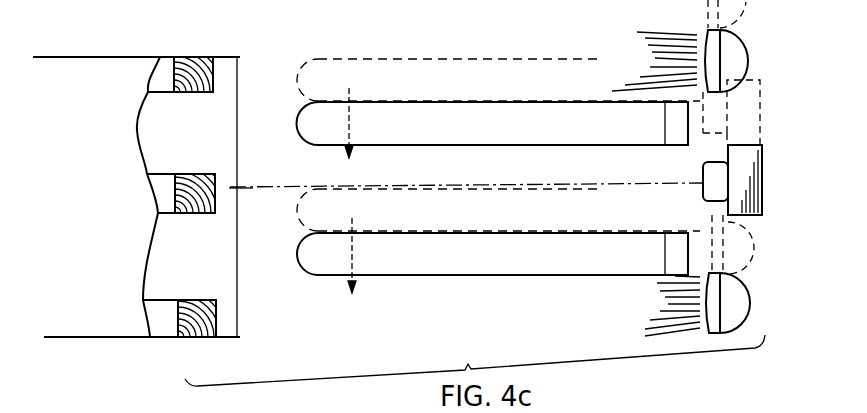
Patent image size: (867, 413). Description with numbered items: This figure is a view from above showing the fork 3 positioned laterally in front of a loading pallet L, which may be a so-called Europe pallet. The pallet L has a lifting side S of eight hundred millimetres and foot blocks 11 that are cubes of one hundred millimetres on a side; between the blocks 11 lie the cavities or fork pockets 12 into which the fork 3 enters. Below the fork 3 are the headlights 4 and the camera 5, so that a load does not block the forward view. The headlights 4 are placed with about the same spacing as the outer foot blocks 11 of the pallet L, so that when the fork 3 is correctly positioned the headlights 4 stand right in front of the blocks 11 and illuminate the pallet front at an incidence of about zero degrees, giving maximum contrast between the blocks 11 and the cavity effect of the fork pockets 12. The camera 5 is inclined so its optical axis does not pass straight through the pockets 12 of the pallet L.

The truck fork 3 is at (434, 145).
The headlights 4 is at (737, 66).
The camera 5 is at (752, 188).
The foot blocks 11 is at (185, 57).
The fork pockets 12 is at (179, 141).
The lifting side S is at (240, 197).
The loading pallet L is at (187, 346).